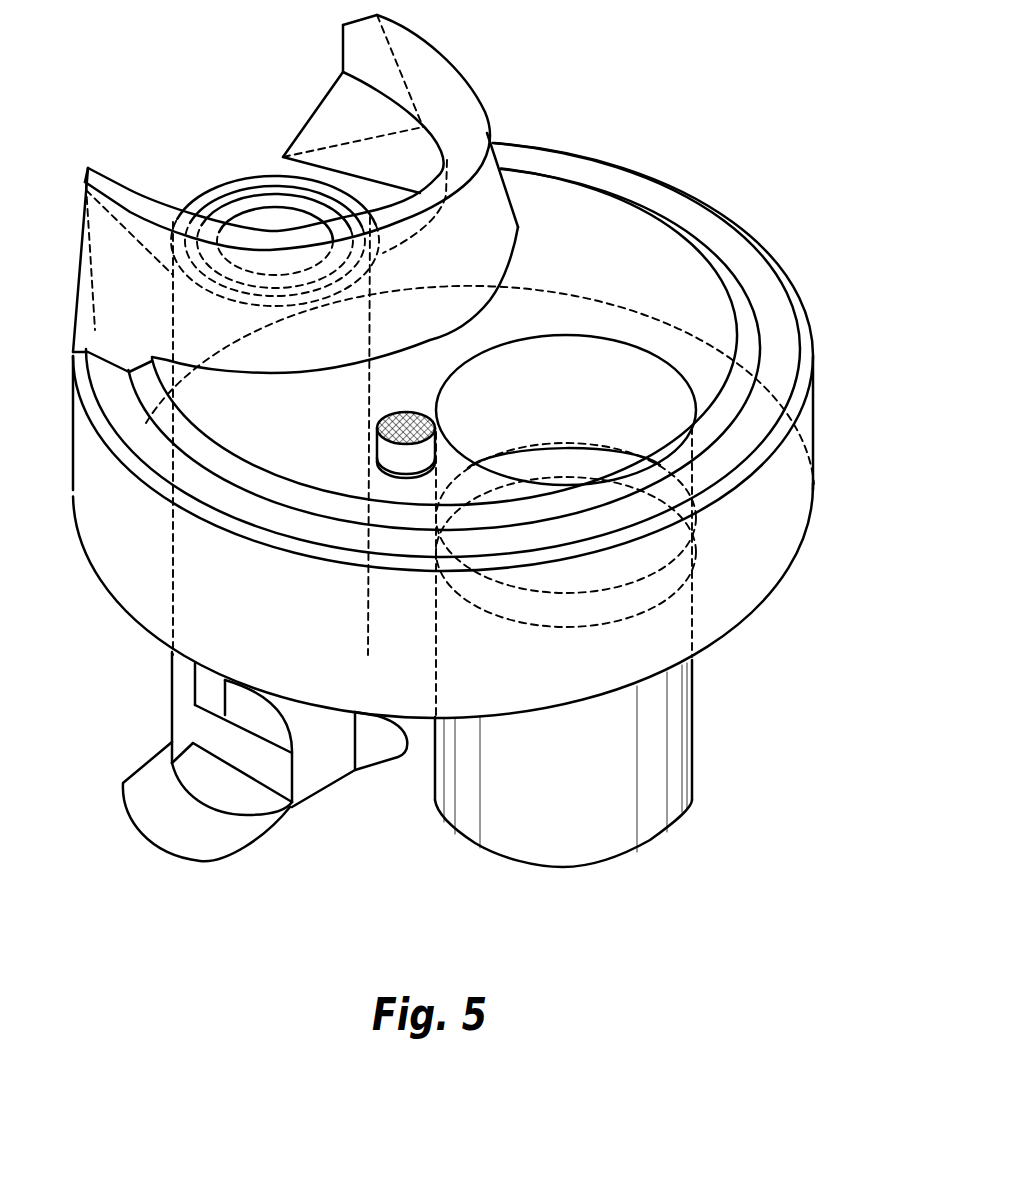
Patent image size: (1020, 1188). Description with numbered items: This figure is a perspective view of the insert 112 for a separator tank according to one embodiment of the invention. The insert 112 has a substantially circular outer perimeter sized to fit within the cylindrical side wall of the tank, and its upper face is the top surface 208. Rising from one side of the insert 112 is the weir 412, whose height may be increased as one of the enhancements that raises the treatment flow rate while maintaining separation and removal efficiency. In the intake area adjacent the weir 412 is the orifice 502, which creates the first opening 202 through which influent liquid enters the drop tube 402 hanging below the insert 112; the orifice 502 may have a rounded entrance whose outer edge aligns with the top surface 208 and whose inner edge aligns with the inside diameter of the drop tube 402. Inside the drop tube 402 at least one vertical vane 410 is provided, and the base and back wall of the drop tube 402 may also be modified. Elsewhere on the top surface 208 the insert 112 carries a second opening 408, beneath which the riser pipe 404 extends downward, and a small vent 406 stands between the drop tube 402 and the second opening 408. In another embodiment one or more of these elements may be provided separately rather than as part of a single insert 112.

The insert 112 is at (655, 140).
The first opening 202 is at (272, 223).
The top surface 208 is at (677, 263).
The drop tube 402 is at (175, 657).
The riser pipe 404 is at (692, 740).
The vent 406 is at (377, 426).
The second opening 408 is at (627, 407).
The vertical vane 410 is at (208, 688).
The weir 412 is at (488, 110).
The orifice 502 is at (230, 205).